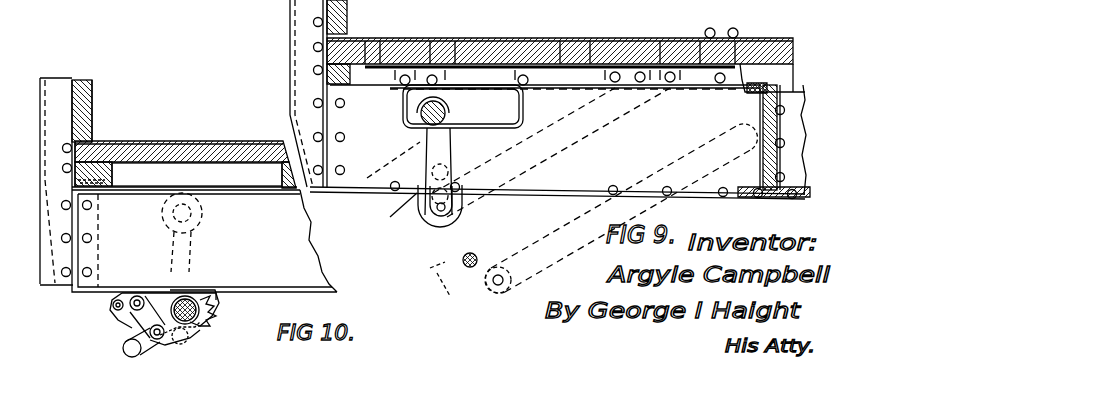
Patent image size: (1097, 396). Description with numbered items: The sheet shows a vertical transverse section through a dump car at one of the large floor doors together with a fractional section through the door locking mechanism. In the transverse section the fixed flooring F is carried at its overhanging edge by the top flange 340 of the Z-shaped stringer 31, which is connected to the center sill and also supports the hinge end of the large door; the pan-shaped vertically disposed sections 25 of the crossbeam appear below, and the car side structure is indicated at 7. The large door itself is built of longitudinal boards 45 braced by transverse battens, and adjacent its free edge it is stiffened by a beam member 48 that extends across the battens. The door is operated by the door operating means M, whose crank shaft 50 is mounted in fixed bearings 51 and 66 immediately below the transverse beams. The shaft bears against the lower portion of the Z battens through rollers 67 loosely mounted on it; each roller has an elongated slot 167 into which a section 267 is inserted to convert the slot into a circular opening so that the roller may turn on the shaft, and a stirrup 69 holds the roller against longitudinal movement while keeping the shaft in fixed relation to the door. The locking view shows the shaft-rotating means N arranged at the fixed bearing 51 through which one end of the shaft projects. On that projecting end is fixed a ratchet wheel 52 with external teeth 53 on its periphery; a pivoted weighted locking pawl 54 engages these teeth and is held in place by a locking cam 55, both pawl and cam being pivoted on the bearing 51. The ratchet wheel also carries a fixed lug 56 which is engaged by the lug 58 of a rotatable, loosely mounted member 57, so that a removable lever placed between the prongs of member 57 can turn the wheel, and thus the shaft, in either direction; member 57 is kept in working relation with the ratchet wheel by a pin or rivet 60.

In FIG. 9, the boards 45 is at (493, 39).
In FIG. 9, the elongated slot 167 is at (450, 90).
In FIG. 9, the pin or rivet 60 is at (721, 20).
In FIG. 9, the top flange 340 is at (735, 65).
In FIG. 9, the fixed flooring F is at (801, 29).
In FIG. 9, the beam member 48 is at (361, 128).
In FIG. 9, the side member 7 is at (346, 92).
In FIG. 9, the rollers 67 is at (452, 113).
In FIG. 9, the stirrup 69 is at (523, 117).
In FIG. 9, the section 267 is at (417, 120).
In FIG. 9, the crank shaft 50 is at (448, 148).
In FIG. 9, the vertically disposed sections 25 is at (551, 152).
In FIG. 9, the stringer 31 is at (735, 95).
In FIG. 9, the door operating means M is at (398, 222).
In FIG. 9, the fixed bearing 66 is at (437, 273).
In FIG. 10, the fixed lug 56 is at (185, 292).
In FIG. 10, the external teeth 53 is at (200, 287).
In FIG. 10, the rotatable loosely mounted member 57 is at (217, 290).
In FIG. 10, the ratchet wheel 52 is at (222, 308).
In FIG. 10, the shaft-rotating means N is at (232, 342).
In FIG. 10, the fixed bearing 51 is at (118, 293).
In FIG. 10, the locking cam 55 is at (118, 310).
In FIG. 10, the lug 58 is at (128, 348).
In FIG. 10, the pivoted weighted locking pawl 54 is at (200, 340).